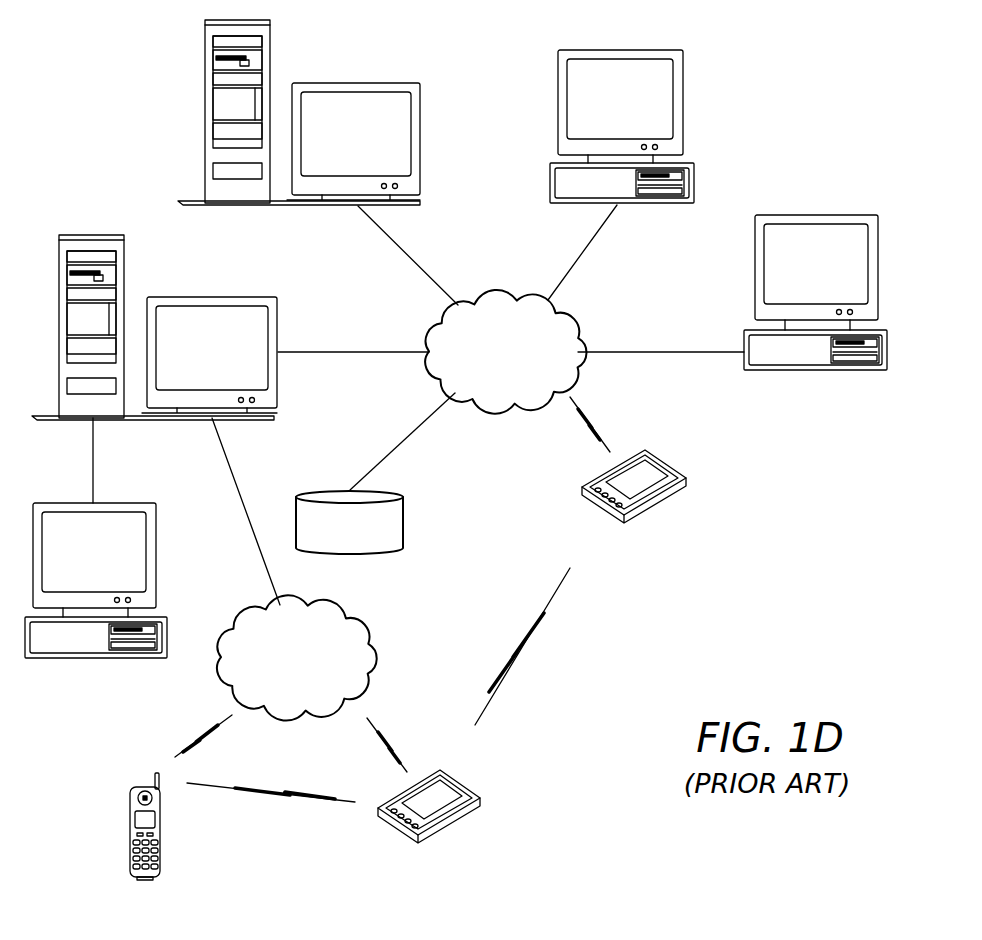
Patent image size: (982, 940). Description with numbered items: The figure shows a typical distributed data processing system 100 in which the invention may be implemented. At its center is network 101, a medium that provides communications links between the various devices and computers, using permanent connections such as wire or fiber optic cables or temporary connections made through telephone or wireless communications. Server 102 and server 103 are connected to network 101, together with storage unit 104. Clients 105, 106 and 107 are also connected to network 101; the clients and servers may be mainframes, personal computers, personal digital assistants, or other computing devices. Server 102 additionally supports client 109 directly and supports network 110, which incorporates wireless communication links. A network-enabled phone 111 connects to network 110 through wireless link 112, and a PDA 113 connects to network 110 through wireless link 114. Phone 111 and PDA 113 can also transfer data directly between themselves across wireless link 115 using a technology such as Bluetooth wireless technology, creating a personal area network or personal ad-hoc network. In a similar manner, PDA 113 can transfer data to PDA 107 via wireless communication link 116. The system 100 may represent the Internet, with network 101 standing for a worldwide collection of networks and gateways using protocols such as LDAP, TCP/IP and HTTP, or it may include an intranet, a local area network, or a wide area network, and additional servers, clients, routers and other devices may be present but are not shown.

The distributed data processing system 100 is at (782, 138).
The network 101 is at (508, 412).
The server 102 is at (189, 358).
The server 103 is at (334, 143).
The storage unit 104 is at (403, 528).
The client 105 is at (597, 110).
The client 106 is at (789, 277).
The client 107 is at (655, 500).
The client 109 is at (70, 568).
The network 110 is at (237, 612).
The network-enabled phone 111 is at (128, 843).
The wireless link 112 is at (198, 740).
The PDA 113 is at (450, 822).
The wireless link 114 is at (378, 735).
The wireless link 115 is at (313, 800).
The wireless communication link 116 is at (545, 612).